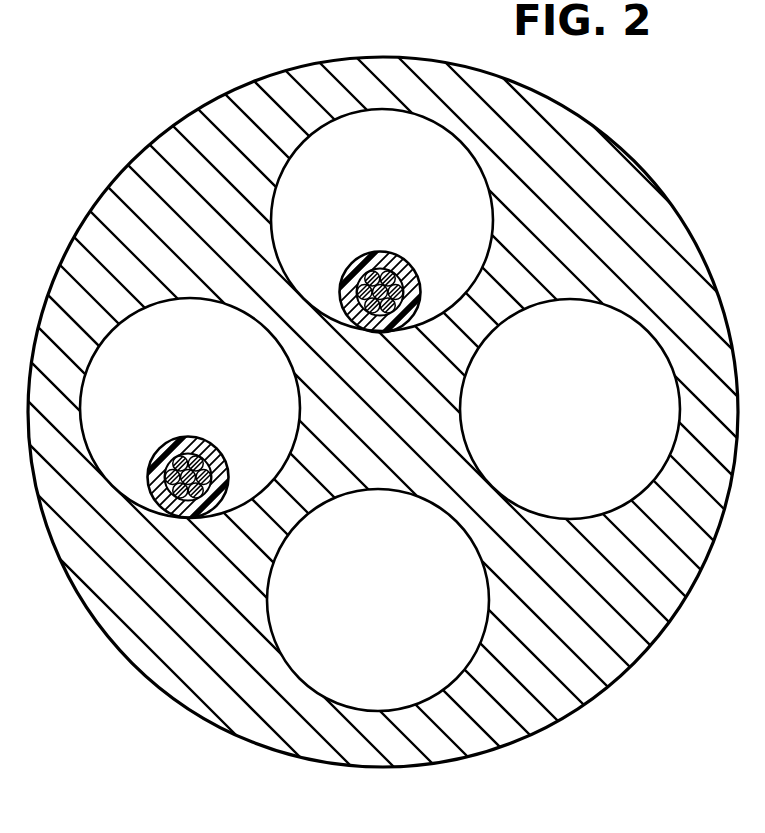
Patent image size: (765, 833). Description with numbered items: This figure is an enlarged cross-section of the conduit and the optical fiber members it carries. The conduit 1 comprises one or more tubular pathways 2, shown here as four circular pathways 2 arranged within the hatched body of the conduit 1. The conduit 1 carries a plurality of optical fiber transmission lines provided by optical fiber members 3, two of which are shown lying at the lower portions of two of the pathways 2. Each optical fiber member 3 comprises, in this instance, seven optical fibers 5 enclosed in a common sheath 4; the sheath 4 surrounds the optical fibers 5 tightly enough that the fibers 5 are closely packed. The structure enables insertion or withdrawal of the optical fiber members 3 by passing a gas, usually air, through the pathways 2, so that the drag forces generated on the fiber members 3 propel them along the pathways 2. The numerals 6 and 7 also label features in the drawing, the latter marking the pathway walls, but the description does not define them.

The conduit 1 is at (120, 210).
The tubular pathway 2 is at (380, 410).
The optical fiber member 3 is at (281, 384).
The sheath 4 is at (398, 263).
The optical fiber 5 is at (403, 283).
The outer tube 6 is at (418, 298).
The channel wall 7 is at (285, 170).